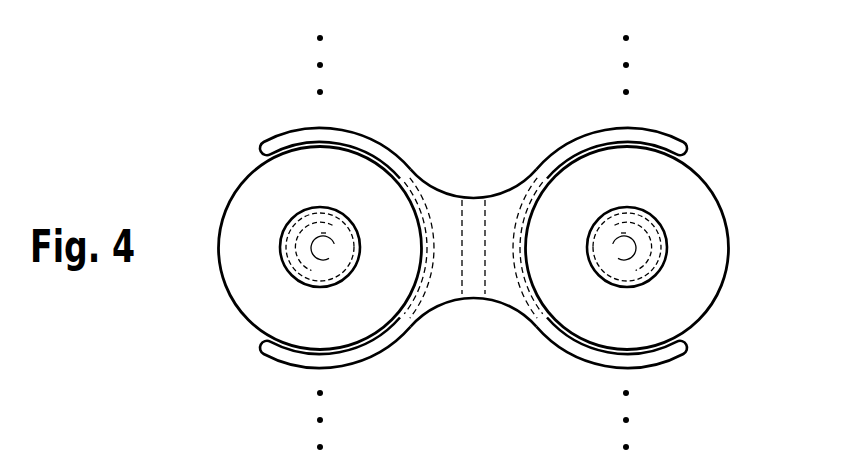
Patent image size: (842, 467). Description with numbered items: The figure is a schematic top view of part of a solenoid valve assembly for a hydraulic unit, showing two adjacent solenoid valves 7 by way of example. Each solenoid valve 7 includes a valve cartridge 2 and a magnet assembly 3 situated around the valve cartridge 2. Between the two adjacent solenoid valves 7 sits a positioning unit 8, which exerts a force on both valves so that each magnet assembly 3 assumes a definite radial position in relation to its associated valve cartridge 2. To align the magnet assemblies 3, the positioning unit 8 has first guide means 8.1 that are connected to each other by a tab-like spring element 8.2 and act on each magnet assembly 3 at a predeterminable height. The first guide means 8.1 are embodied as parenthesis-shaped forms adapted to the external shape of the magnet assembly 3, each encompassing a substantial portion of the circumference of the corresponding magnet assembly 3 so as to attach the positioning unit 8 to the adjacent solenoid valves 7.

The valve cartridge 2 is at (308, 260).
The magnet assembly 3 is at (238, 228).
The solenoid valve 7 is at (186, 133).
The positioning unit 8 is at (429, 139).
The first guide means 8.1 is at (285, 142).
The tab-like spring element 8.2 is at (473, 277).